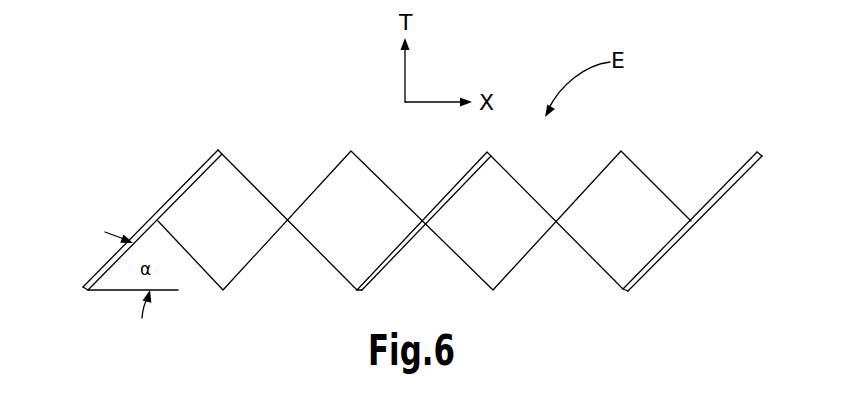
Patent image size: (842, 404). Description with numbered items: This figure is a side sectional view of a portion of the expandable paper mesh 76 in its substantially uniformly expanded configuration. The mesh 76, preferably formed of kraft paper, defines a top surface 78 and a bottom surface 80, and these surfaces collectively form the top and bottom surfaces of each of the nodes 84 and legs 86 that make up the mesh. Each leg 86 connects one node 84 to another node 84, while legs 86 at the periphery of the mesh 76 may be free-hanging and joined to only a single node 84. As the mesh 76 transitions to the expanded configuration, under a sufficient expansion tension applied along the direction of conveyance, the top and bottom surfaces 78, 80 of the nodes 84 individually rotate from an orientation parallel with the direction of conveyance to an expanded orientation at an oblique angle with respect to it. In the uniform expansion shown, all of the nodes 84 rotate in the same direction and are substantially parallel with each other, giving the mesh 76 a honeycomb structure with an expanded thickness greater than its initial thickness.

The expandable paper mesh 76 is at (633, 304).
The top surface 78 is at (180, 189).
The bottom surface 80 is at (183, 191).
The node 84 is at (136, 228).
The leg 86 is at (227, 188).